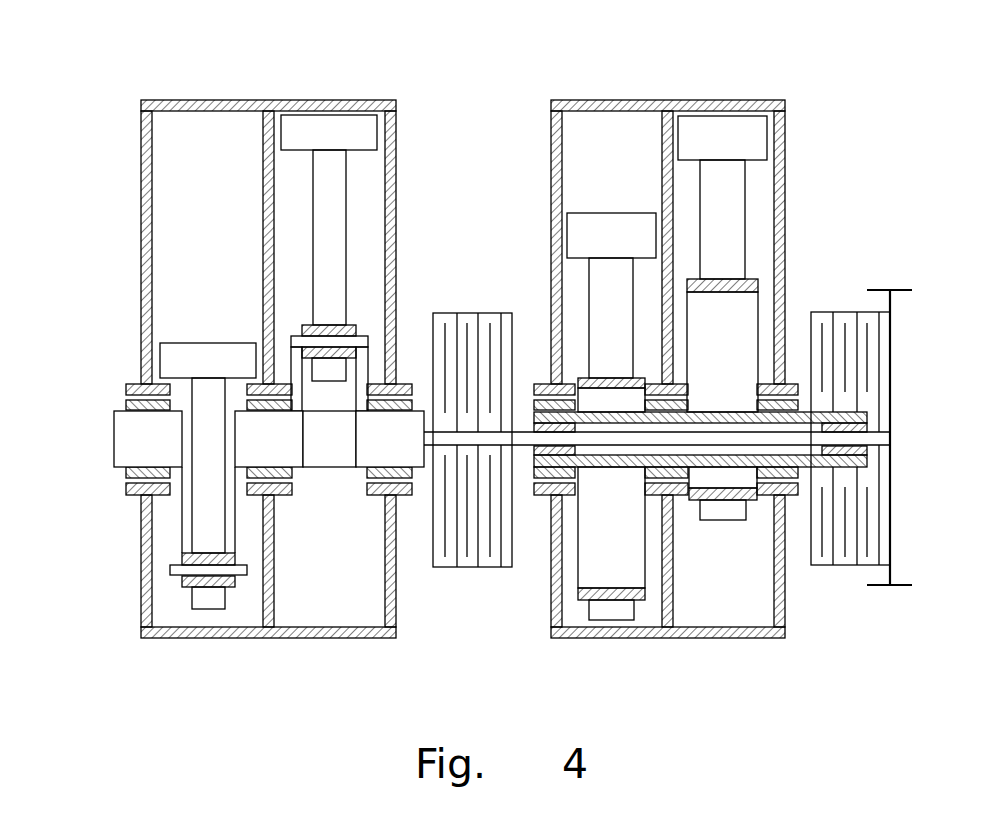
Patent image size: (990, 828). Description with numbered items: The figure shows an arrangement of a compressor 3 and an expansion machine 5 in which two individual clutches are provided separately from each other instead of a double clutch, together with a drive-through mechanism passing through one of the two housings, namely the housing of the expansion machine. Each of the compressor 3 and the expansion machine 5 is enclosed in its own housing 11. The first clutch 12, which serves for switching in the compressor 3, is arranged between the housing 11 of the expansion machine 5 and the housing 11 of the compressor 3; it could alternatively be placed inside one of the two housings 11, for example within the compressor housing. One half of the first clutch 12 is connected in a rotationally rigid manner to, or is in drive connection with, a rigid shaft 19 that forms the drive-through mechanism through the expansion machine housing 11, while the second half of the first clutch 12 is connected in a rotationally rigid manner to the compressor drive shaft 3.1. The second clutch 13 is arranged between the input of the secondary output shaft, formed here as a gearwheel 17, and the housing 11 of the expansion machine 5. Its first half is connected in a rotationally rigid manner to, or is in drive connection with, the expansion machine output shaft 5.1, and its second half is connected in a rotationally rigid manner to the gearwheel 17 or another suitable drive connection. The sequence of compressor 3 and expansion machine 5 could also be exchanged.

The compressor 3 is at (272, 78).
The compressor drive shaft 3.1 is at (406, 452).
The expansion machine 5 is at (674, 76).
The expansion machine output shaft 5.1 is at (805, 392).
The housing 11 is at (357, 100).
The first clutch 12 is at (467, 572).
The second clutch 13 is at (842, 570).
The gearwheel 17 is at (905, 287).
The rigid shaft 19 is at (882, 440).